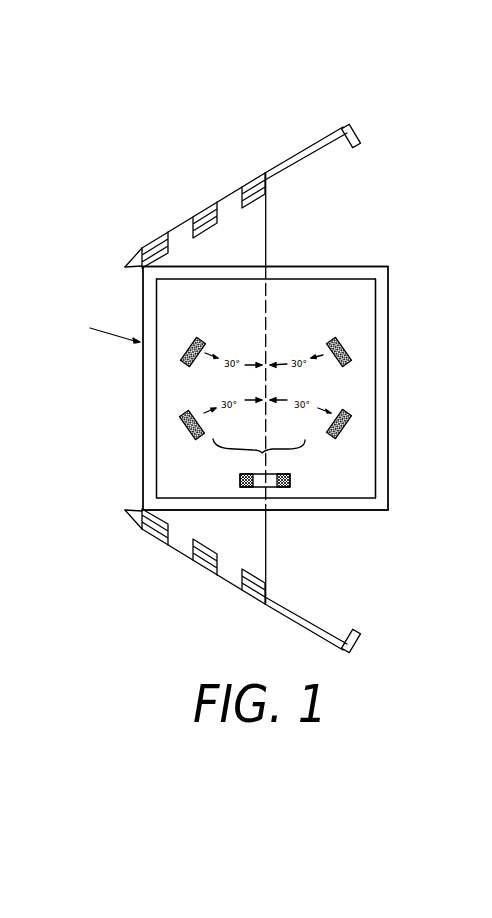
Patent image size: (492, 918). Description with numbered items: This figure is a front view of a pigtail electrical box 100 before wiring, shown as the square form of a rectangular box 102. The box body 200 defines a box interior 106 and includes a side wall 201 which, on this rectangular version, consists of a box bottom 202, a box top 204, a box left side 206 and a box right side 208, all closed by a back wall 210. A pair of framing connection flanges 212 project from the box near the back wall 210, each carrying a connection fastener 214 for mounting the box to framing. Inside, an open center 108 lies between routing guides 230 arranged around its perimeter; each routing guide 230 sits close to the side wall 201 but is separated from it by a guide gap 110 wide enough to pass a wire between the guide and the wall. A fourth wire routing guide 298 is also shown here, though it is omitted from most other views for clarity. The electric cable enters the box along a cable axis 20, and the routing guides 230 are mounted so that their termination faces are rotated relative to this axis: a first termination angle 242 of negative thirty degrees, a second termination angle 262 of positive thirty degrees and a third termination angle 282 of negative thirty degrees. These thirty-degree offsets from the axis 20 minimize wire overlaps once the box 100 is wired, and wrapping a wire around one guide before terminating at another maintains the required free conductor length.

The pigtail electrical box 100 is at (311, 322).
The rectangular box 102 is at (388, 302).
The box interior 106 is at (156, 417).
The open center 108 is at (262, 452).
The guide gap 110 is at (352, 368).
The cable axis 20 is at (268, 315).
The box body 200 is at (142, 380).
The side wall 201 is at (96, 331).
The box bottom 202 is at (367, 512).
The box top 204 is at (292, 266).
The box left side 206 is at (142, 301).
The box right side 208 is at (388, 335).
The back wall 210 is at (363, 477).
The framing connection flanges 212 is at (262, 172).
The connection fastener 214 is at (347, 125).
The routing guides 230 is at (336, 331).
The first termination angle 242 is at (230, 345).
The second termination angle 262 is at (304, 352).
The third termination angle 282 is at (310, 413).
The fourth wire routing guide 298 is at (190, 438).